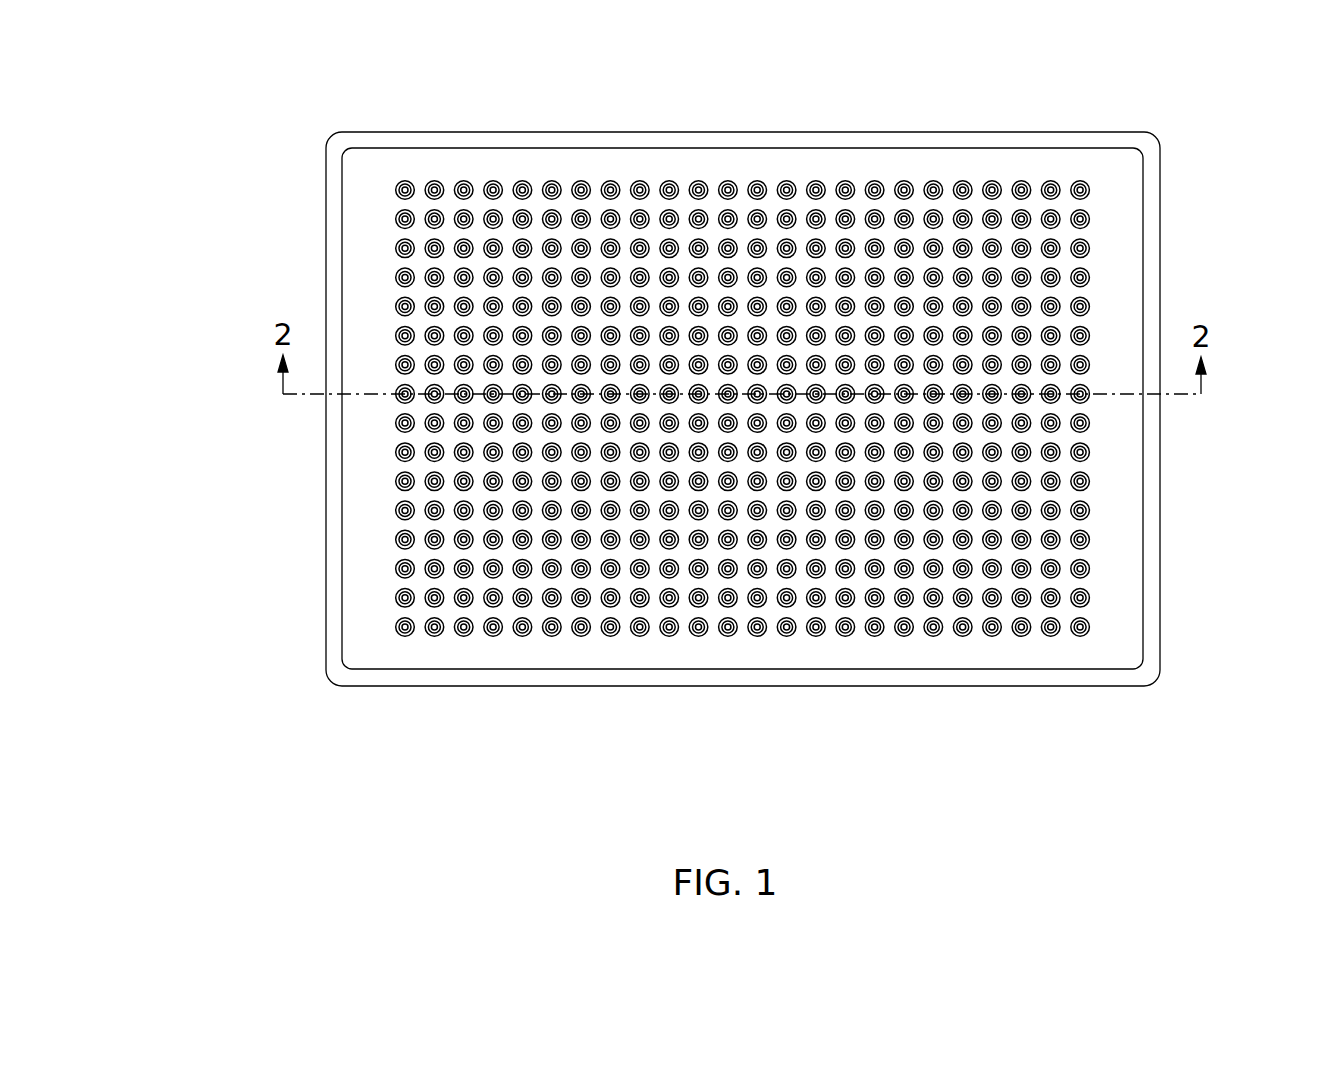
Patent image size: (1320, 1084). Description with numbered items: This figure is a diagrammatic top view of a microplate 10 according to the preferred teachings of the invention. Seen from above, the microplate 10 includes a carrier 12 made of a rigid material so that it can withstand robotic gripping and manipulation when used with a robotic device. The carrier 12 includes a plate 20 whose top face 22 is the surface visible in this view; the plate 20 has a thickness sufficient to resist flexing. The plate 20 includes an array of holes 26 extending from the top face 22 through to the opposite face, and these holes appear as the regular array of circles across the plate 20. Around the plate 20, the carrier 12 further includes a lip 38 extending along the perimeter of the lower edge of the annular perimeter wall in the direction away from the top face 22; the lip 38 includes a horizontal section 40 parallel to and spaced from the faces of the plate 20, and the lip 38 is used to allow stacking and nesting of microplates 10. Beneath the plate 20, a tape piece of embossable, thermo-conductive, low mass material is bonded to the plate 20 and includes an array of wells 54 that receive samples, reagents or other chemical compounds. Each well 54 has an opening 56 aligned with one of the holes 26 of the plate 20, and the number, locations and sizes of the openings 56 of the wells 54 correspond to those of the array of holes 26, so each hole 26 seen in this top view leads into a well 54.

The microplate 10 is at (737, 449).
The carrier 12 is at (713, 409).
The plate 20 is at (785, 474).
The top face 22 is at (718, 692).
The holes 26 is at (400, 637).
The lip 38 is at (1160, 498).
The horizontal section 40 is at (1150, 257).
The wells 54 is at (843, 628).
The opening 56 is at (932, 628).